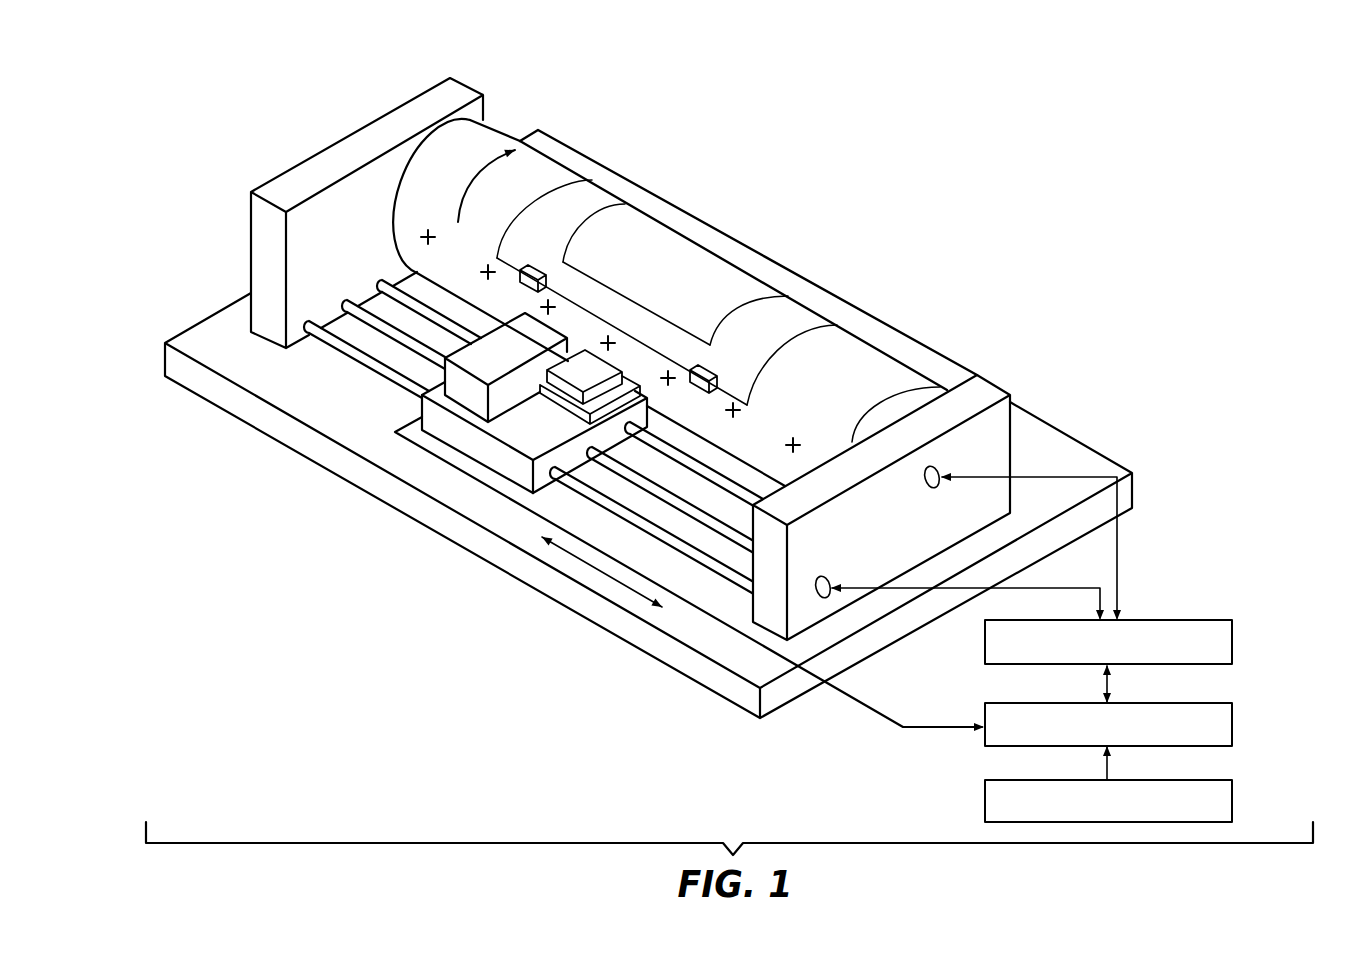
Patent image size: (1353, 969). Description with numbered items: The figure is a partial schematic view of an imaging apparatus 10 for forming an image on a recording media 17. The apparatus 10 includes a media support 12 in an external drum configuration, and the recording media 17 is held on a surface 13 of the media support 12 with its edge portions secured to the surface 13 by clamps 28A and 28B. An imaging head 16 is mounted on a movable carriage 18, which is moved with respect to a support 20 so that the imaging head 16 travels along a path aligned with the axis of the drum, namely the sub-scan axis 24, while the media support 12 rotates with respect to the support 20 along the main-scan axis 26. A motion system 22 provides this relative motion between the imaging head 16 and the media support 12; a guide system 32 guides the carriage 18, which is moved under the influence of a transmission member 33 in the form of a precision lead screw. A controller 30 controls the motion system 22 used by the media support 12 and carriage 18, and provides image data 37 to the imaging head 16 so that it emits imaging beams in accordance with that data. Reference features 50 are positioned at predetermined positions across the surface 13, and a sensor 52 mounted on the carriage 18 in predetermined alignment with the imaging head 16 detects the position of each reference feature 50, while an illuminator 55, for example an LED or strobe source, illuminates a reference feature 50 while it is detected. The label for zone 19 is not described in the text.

The apparatus 10 is at (833, 163).
The media support 12 is at (925, 392).
The surface 13 is at (835, 338).
The imaging head 16 is at (468, 402).
The recording media 17 is at (592, 197).
The carriage 18 is at (497, 465).
The image area section 19 is at (680, 250).
The support 20 is at (708, 643).
The motion system 22 is at (1234, 648).
The sub-scan axis 24 is at (595, 568).
The main-scan axis 26 is at (442, 262).
The clamp 28A is at (697, 367).
The clamp 28B is at (537, 270).
The controller 30 is at (1234, 729).
The guide system 32 is at (682, 460).
The transmission member 33 is at (715, 522).
The image data 37 is at (1234, 806).
The reference features 50 is at (794, 443).
The sensor 52 is at (577, 412).
The illuminator 55 is at (553, 378).